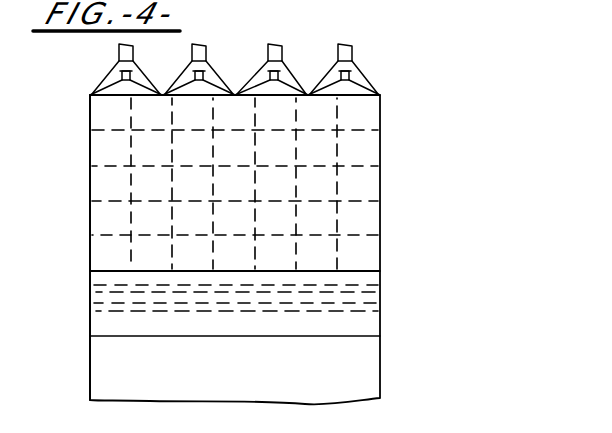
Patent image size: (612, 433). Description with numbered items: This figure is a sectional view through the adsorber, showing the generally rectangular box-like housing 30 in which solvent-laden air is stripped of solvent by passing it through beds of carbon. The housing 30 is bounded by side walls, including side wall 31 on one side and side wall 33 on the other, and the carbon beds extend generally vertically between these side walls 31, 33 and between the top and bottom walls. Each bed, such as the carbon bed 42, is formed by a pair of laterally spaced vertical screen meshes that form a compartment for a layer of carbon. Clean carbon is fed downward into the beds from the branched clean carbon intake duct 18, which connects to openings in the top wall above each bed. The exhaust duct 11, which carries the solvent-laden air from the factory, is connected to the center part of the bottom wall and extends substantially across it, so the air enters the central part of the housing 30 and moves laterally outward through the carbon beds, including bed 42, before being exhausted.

The exhaust duct 11 is at (380, 354).
The clean carbon intake duct 18 is at (195, 56).
The housing 30 is at (413, 105).
The side wall 31 is at (382, 178).
The side wall 33 is at (90, 142).
The carbon bed 42 is at (388, 220).